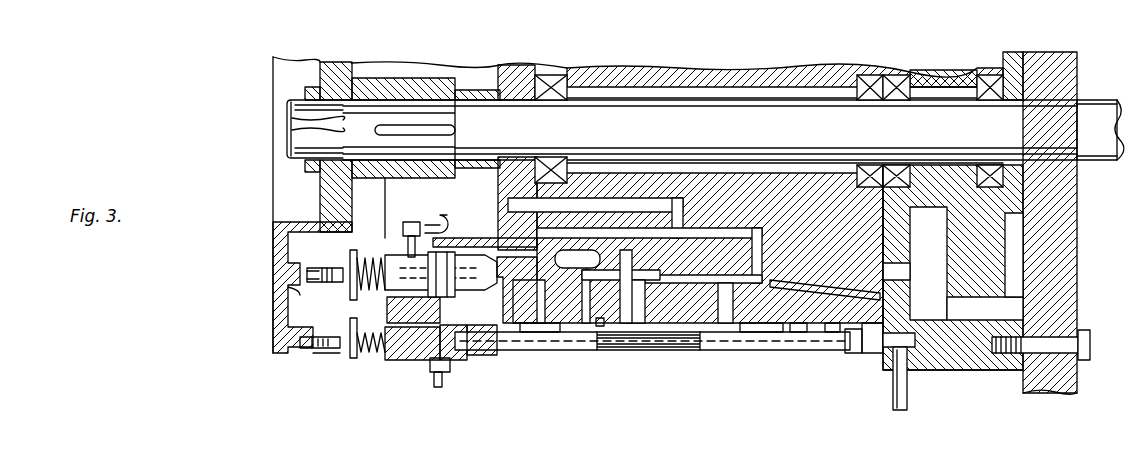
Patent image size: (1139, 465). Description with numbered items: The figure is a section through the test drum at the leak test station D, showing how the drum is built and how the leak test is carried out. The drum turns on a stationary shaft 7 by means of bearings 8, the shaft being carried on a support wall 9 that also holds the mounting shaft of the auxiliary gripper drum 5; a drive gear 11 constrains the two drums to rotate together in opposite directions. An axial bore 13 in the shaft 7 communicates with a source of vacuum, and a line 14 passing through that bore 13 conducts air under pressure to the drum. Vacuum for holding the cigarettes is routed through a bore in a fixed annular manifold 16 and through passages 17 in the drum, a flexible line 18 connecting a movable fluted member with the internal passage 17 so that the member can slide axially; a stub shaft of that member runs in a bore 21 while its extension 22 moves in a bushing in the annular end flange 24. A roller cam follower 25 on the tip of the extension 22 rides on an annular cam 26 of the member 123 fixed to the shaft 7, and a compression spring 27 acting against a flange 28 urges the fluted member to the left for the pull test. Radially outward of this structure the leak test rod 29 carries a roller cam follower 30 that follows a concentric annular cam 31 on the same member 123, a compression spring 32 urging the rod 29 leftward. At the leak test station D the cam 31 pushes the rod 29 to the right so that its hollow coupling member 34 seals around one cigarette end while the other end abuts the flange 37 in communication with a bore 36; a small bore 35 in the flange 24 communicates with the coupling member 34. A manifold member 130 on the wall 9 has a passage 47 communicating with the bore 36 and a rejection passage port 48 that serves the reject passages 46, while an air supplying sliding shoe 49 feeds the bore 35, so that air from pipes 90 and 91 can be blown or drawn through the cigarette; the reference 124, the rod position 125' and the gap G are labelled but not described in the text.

The auxiliary gripper drum 5 is at (940, 117).
The stationary shaft 7 is at (710, 141).
The bearings 8 is at (567, 155).
The wall 9 is at (1063, 277).
The drive gear 11 is at (995, 238).
The axial bore 13 is at (300, 108).
The line 14 is at (372, 131).
The fixed annular manifold 16 is at (500, 187).
The passages 17 is at (742, 234).
The flexible line 18 is at (440, 215).
The bore 21 is at (630, 326).
The extensions 22 is at (508, 296).
The annular end flange 24 is at (410, 360).
The roller cam followers 25 is at (296, 292).
The annular cam 26 is at (300, 271).
The compression springs 27 is at (355, 252).
The flanges 28 is at (362, 291).
The rods 29 is at (378, 360).
The roller cam followers 30 is at (316, 358).
The annular cam 31 is at (298, 358).
The compression springs 32 is at (359, 367).
The hollow cigarette end coupling member 34 is at (450, 297).
The small bores 35 is at (455, 360).
The bores 36 is at (878, 360).
The flange 37 is at (864, 345).
The passages 46 is at (808, 298).
The passage 47 is at (908, 376).
The rejection passage port 48 is at (832, 298).
The air supplying sliding shoe 49 is at (444, 382).
The pipe 90 is at (420, 392).
The pipe 91 is at (905, 398).
The fixed member 123 is at (281, 234).
The position 124 is at (558, 352).
The rod 125' is at (658, 357).
The manifold member 130 is at (998, 372).
The leak test station D is at (255, 352).
The gap G is at (652, 352).